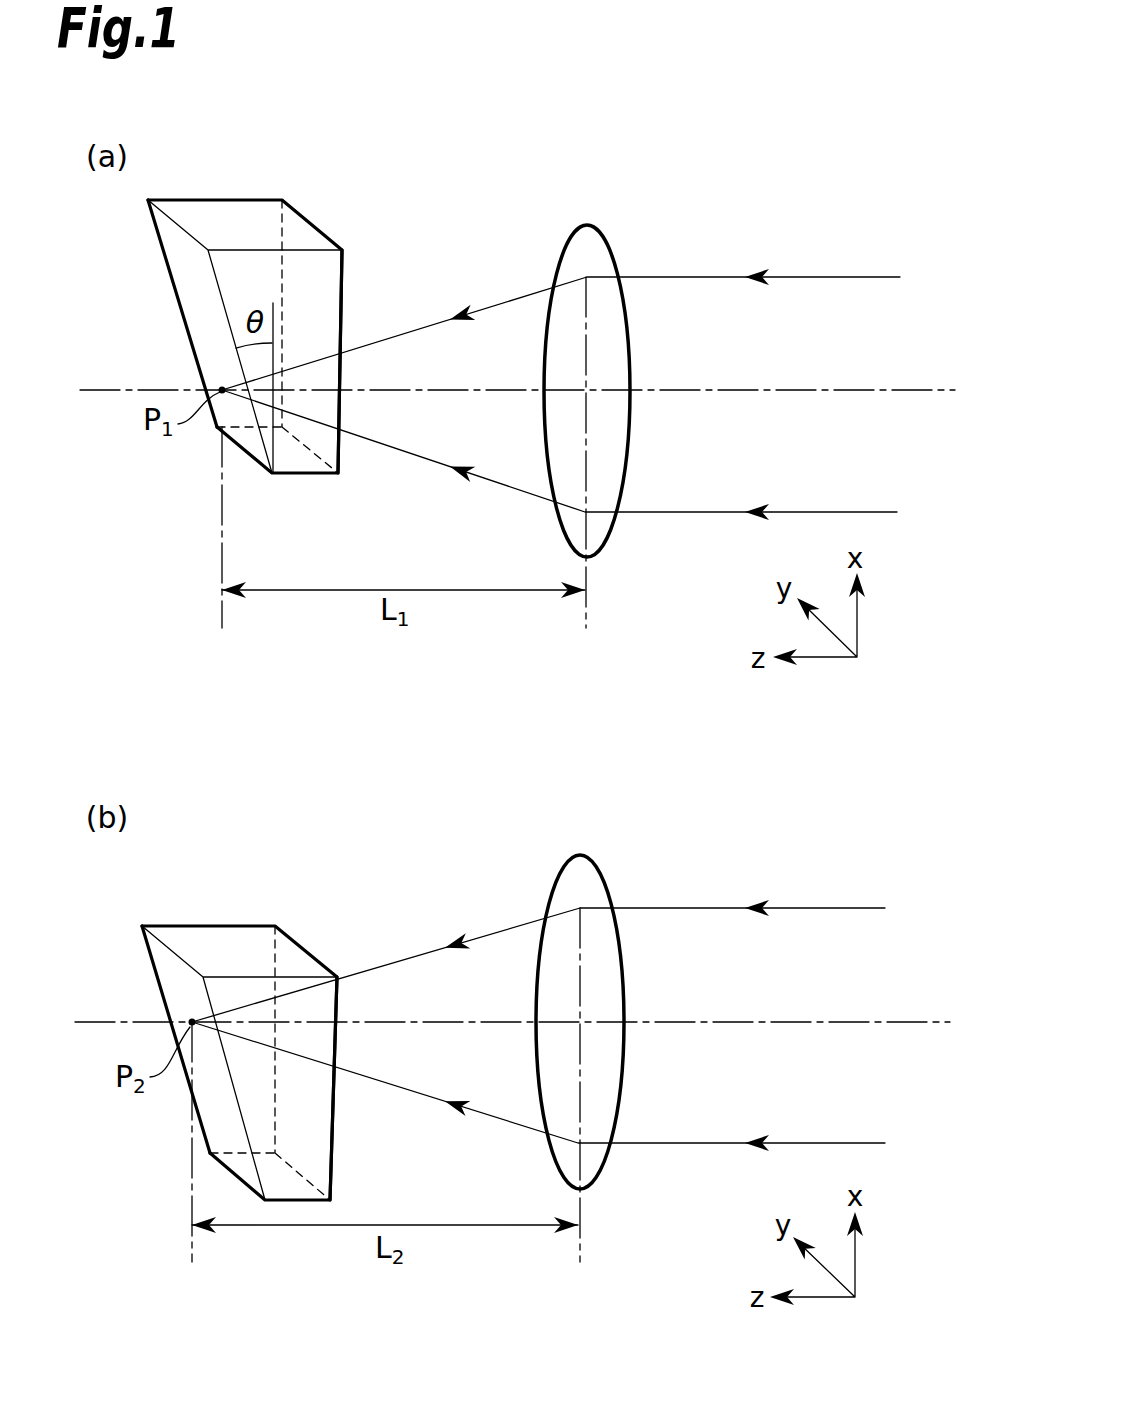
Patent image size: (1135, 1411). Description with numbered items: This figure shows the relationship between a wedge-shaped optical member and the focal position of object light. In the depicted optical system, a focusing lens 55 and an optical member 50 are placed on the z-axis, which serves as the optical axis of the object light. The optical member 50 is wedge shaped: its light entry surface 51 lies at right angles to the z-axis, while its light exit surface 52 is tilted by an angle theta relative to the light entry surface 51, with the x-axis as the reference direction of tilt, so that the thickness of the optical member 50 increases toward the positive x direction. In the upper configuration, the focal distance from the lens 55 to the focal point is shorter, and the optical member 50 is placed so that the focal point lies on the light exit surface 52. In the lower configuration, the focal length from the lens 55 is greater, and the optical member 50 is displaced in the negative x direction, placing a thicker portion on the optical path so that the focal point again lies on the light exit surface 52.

The optical member 50 is at (241, 212).
The light entry surface 51 is at (344, 283).
The light exit surface 52 is at (198, 318).
The focusing lens 55 is at (616, 258).